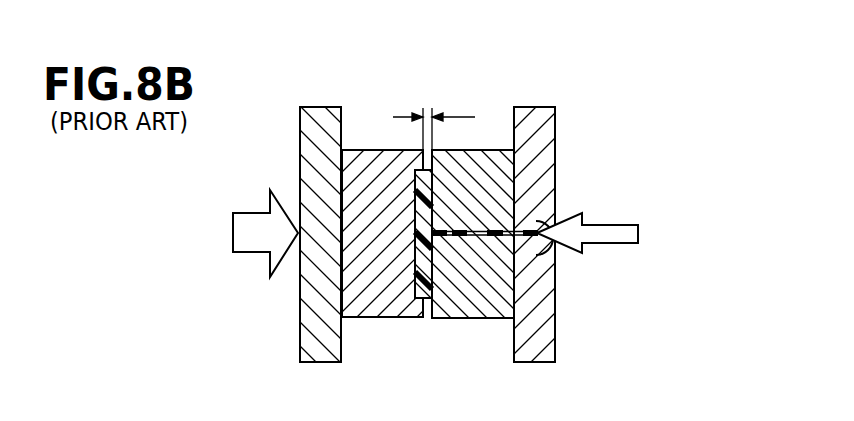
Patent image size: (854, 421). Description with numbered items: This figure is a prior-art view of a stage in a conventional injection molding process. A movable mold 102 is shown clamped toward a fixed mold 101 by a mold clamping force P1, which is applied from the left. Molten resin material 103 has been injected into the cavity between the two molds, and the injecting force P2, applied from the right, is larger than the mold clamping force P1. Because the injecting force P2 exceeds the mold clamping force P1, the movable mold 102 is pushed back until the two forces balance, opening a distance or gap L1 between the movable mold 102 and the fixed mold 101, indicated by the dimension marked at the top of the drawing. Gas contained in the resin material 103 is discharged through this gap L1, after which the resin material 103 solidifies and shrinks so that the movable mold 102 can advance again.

The fixed mold 101 is at (485, 150).
The movable mold 102 is at (370, 150).
The molten resin material 103 is at (413, 250).
The gap L1 is at (437, 118).
The mold clamping force P1 is at (245, 233).
The injecting force P2 is at (610, 233).